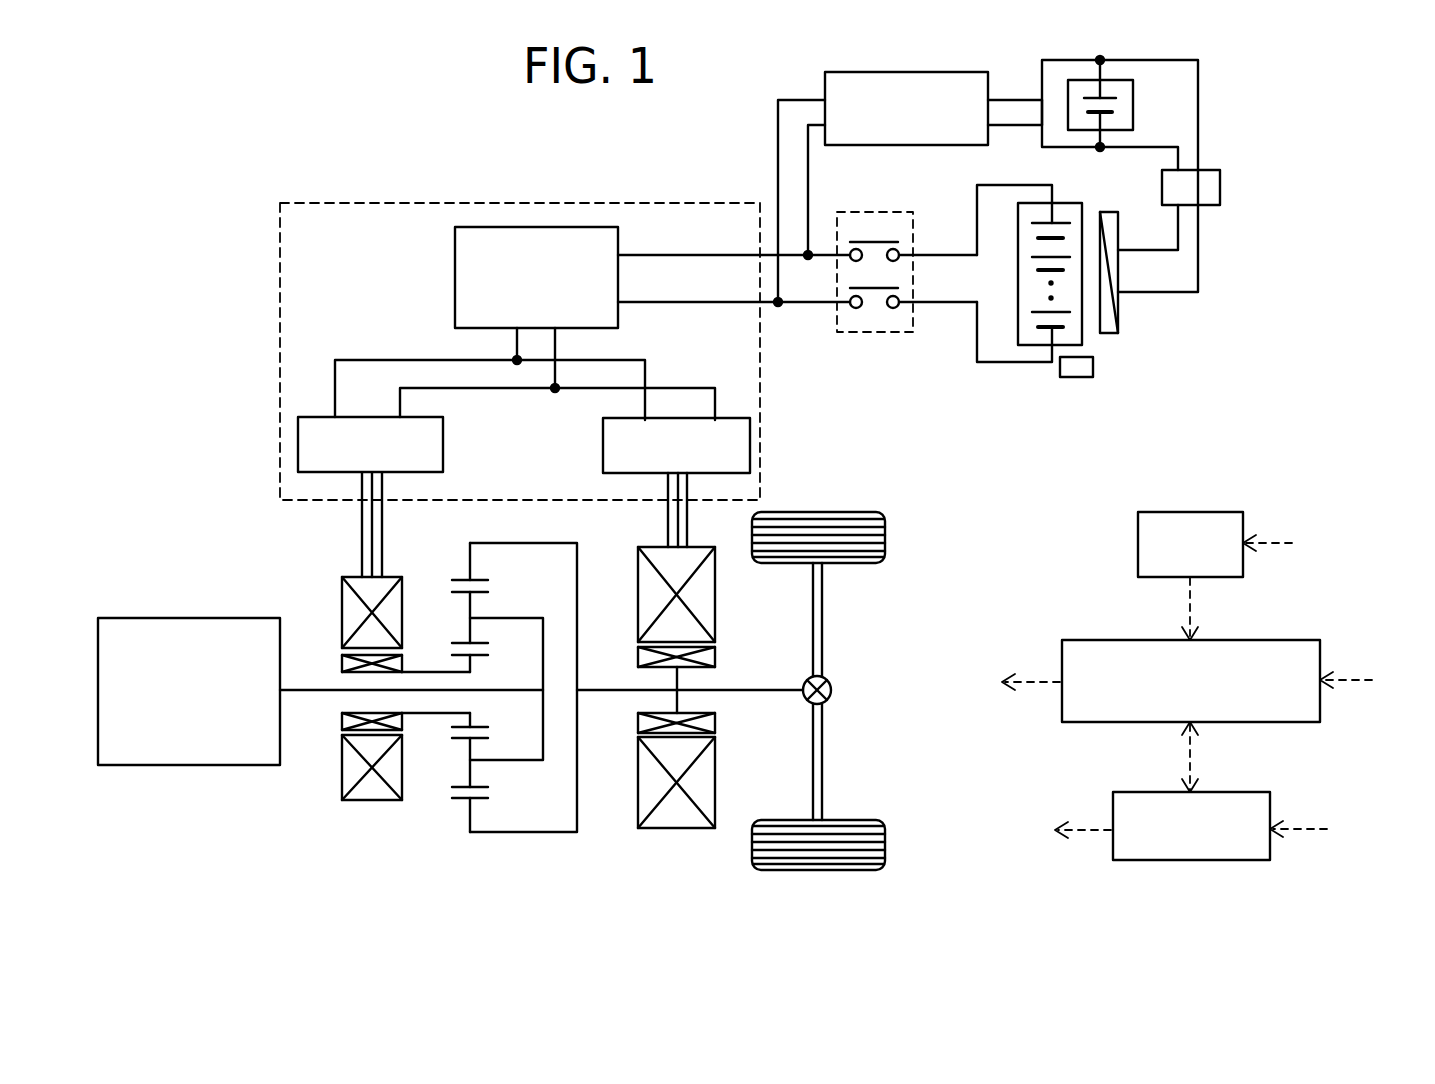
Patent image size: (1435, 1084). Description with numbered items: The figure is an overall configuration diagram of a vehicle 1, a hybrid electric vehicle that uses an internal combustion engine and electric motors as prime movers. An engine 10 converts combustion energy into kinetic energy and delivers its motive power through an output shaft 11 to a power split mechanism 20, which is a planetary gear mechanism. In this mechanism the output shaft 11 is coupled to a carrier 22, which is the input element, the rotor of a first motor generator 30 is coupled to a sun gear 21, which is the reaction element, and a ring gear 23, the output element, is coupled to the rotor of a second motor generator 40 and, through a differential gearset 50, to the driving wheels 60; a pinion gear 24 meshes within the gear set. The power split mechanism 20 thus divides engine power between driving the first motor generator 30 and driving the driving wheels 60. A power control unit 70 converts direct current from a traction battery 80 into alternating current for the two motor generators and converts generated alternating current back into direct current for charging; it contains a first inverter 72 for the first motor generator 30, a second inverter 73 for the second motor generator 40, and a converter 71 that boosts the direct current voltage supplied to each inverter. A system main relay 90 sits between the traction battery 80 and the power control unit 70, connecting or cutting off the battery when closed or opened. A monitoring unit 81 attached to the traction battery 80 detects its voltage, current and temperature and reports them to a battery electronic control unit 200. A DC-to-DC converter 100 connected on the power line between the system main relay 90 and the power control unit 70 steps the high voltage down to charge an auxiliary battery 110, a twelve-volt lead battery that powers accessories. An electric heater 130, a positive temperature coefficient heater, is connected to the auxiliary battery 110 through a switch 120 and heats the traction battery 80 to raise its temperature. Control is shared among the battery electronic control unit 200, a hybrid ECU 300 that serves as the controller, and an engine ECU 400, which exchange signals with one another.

The vehicle 1 is at (1366, 240).
The engine 10 is at (188, 767).
The output shaft 11 is at (312, 690).
The power split mechanism 20 is at (489, 752).
The sun gear 21 is at (423, 670).
The carrier 22 is at (505, 618).
The ring gear 23 is at (528, 834).
The pinion gear 24 is at (467, 768).
The first motor generator 30 is at (348, 800).
The second motor generator 40 is at (645, 833).
The differential gearset 50 is at (827, 703).
The driving wheels 60 is at (818, 512).
The power control unit 70 is at (565, 335).
The converter 71 is at (455, 258).
The first inverter 72 is at (445, 448).
The second inverter 73 is at (603, 453).
The traction battery 80 is at (1063, 203).
The monitoring unit 81 is at (1075, 378).
The system main relay 90 is at (870, 333).
The DC-to-DC converter 100 is at (907, 72).
The auxiliary battery 110 is at (1133, 102).
The switch 120 is at (1215, 170).
The electric heater 130 is at (1118, 333).
The battery electronic control unit 200 is at (1227, 512).
The hybrid ECU 300 is at (1287, 643).
The engine ECU 400 is at (1238, 795).